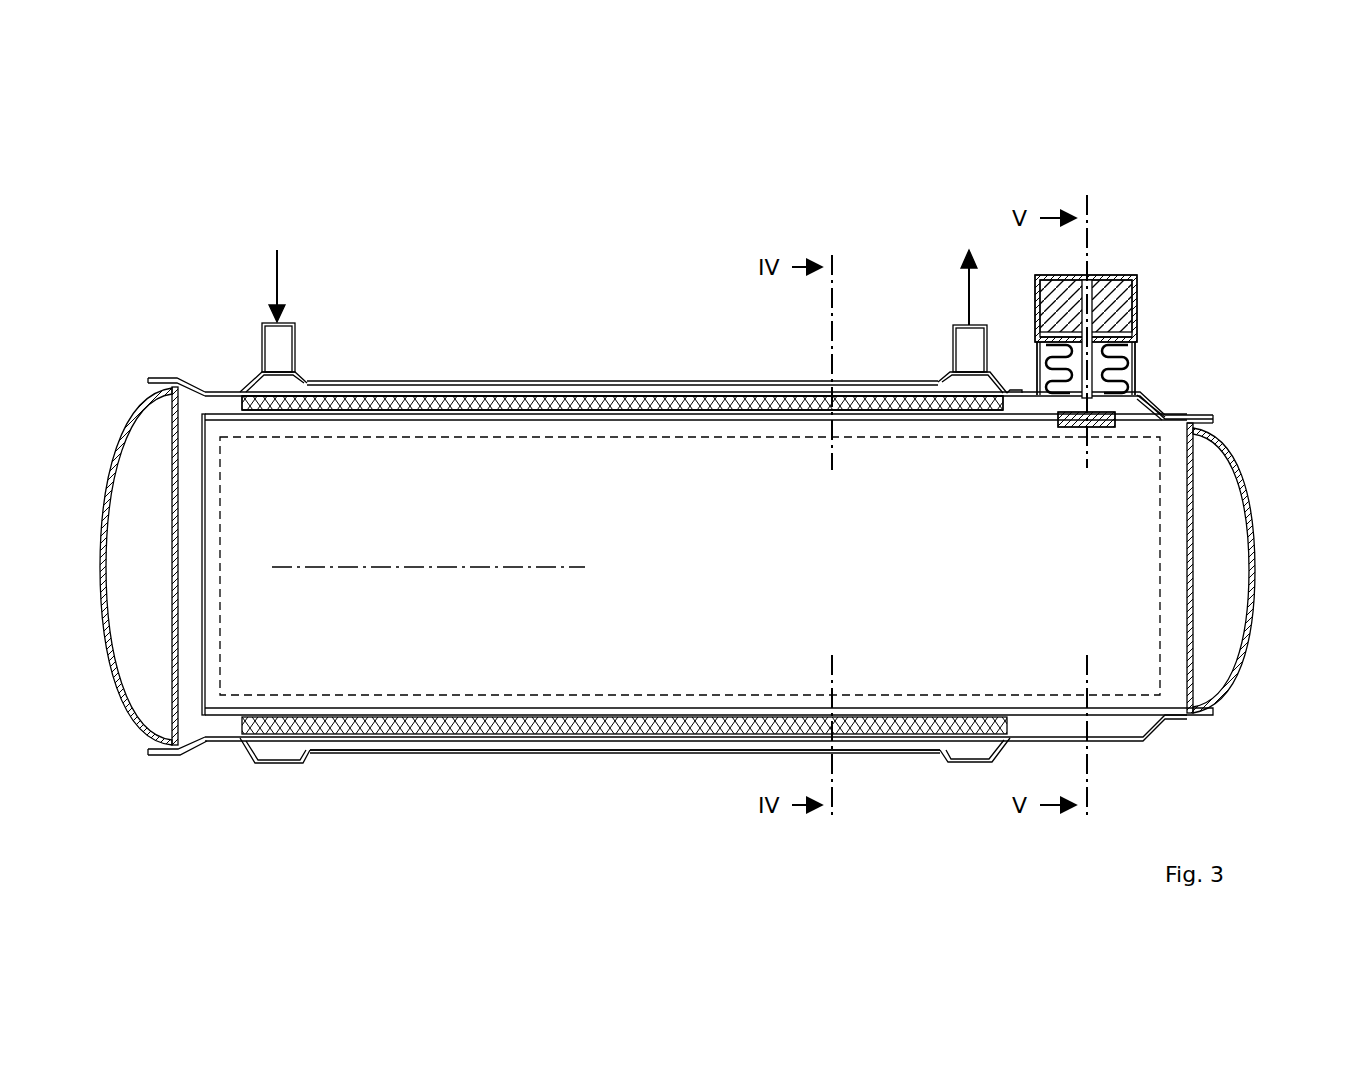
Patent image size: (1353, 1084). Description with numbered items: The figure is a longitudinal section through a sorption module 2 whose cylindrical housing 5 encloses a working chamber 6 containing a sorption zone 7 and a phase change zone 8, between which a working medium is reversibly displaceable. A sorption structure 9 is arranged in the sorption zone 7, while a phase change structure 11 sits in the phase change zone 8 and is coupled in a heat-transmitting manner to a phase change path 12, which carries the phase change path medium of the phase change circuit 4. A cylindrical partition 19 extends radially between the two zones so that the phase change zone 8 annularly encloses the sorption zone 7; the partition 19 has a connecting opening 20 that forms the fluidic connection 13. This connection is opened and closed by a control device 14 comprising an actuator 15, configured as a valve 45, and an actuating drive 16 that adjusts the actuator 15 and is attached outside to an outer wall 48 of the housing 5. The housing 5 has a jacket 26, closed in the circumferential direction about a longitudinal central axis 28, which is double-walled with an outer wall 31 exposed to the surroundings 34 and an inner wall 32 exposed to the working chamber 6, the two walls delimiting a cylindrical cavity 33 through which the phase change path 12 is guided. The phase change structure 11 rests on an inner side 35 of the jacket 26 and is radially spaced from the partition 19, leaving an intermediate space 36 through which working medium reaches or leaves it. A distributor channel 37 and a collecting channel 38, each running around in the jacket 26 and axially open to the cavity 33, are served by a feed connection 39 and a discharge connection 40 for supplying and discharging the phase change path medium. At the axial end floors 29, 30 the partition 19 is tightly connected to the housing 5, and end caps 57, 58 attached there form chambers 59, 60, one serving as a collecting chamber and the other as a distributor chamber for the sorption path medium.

The sorption module 2 is at (1272, 258).
The phase change circuit 4 is at (268, 279).
The housing 5 is at (556, 375).
The working chamber 6 is at (530, 625).
The sorption zone 7 is at (460, 395).
The phase change zone 8 is at (700, 388).
The sorption structure 9 is at (412, 455).
The phase change structure 11 is at (641, 395).
The phase change path 12 is at (787, 393).
The fluidic connection 13 is at (1068, 427).
The control device 14 is at (1172, 292).
The actuator 15 is at (1100, 427).
The actuating drive 16 is at (1105, 285).
The partition 19 is at (681, 437).
The connecting opening 20 is at (1086, 419).
The jacket 26 is at (681, 768).
The longitudinal central axis 28 is at (430, 565).
The axial end floor 29 is at (170, 500).
The axial end floor 30 is at (1195, 505).
The outer wall 31 is at (470, 757).
The inner wall 32 is at (570, 736).
The cavity 33 is at (528, 745).
The surroundings 34 is at (603, 231).
The inner side 35 is at (535, 420).
The intermediate space 36 is at (606, 423).
The distributor channel 37 is at (270, 752).
The collecting channel 38 is at (968, 755).
The feed connection 39 is at (297, 345).
The discharge connection 40 is at (952, 340).
The valve 45 is at (1086, 368).
The outer wall 48 is at (1150, 403).
The end cap 57 is at (128, 418).
The end cap 58 is at (1245, 475).
The chamber 59 is at (150, 585).
The chamber 60 is at (1236, 588).